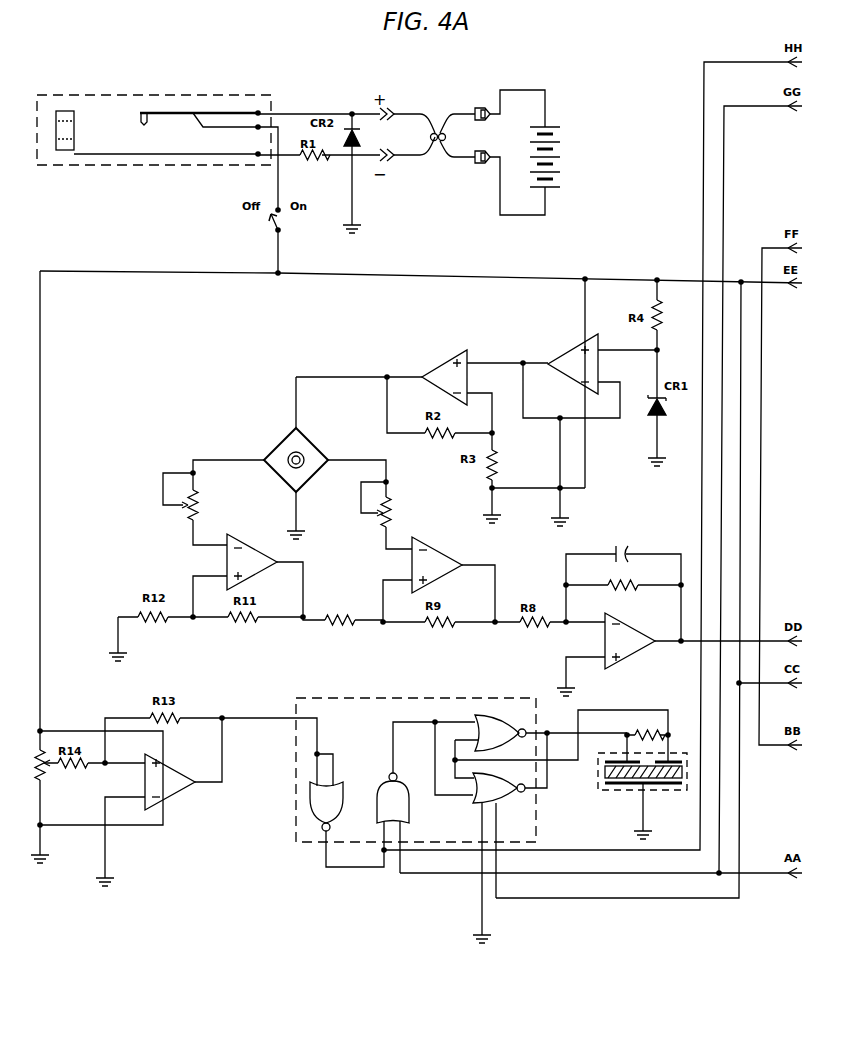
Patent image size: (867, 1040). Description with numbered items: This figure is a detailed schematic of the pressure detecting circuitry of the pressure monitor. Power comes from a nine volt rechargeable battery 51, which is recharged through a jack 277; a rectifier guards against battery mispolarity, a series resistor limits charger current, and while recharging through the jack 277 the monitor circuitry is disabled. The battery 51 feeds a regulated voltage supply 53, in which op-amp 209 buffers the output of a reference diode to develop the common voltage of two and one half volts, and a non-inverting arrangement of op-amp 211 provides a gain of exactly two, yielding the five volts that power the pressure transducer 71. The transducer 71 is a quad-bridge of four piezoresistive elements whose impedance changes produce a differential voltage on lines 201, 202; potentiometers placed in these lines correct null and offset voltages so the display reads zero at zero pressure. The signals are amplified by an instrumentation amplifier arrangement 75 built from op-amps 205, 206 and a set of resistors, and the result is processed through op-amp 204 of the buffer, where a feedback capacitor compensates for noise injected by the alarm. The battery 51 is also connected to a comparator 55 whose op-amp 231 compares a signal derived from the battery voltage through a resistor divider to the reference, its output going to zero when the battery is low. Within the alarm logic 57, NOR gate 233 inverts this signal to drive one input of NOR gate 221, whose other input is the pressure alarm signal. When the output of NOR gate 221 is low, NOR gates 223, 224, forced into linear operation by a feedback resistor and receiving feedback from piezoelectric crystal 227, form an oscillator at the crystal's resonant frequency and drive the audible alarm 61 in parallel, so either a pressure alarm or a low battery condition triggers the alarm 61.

The jack 277 is at (122, 102).
The battery 51 is at (566, 117).
The regulated voltage supply 53 is at (505, 347).
The op-amp 209 is at (572, 352).
The op-amp 211 is at (440, 366).
The pressure transducer 71 is at (280, 440).
The line 201 is at (203, 458).
The line 202 is at (350, 462).
The operational amplifier 205 is at (247, 546).
The operational amplifier 206 is at (438, 554).
The instrumentation amplifier arrangement 75 is at (328, 627).
The op-amp 204 is at (628, 650).
The alarm logic 57 is at (418, 702).
The NOR gate 224 is at (497, 720).
The NOR gate 221 is at (387, 796).
The NOR gate 223 is at (493, 800).
The NOR gate 233 is at (310, 796).
The op-amp 231 is at (173, 778).
The comparator 55 is at (178, 803).
The piezoelectric crystal 227 is at (605, 770).
The audible alarm 61 is at (620, 795).